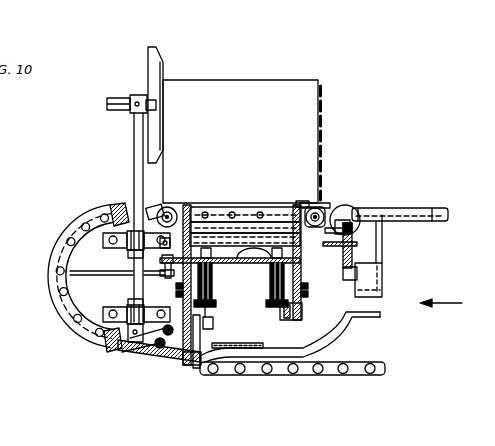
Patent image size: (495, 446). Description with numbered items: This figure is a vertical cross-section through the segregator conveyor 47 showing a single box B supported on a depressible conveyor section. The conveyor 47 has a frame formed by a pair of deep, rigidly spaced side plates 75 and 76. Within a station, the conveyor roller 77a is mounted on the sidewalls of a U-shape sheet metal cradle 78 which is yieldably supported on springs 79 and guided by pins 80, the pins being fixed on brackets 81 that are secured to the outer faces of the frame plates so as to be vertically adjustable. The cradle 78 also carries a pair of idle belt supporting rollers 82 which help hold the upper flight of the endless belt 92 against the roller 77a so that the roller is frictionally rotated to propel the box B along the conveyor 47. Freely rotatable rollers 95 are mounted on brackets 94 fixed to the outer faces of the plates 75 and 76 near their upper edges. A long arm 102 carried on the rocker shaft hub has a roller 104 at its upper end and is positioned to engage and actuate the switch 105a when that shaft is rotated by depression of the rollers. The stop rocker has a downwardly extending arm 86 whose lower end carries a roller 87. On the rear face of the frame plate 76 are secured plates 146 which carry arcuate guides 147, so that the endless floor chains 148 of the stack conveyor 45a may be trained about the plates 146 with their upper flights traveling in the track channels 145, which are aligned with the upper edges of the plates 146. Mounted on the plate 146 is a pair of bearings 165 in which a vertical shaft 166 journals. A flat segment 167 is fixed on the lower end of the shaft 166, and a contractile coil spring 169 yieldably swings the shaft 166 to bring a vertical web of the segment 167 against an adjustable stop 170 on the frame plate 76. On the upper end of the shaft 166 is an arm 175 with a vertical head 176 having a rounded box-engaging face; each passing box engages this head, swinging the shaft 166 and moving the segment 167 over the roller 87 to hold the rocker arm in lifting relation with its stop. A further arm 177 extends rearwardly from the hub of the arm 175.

The box B is at (305, 115).
The vertical head 176 is at (150, 83).
The arm 177 is at (107, 105).
The arm 175 is at (157, 104).
The vertical shaft 166 is at (135, 137).
The bearings 165 is at (113, 306).
The arcuate guides 147 is at (70, 230).
The plates 146 is at (119, 211).
The adjustable stop 170 is at (116, 352).
The contractile coil spring 169 is at (148, 353).
The flat segment 167 is at (183, 363).
The roller 87 is at (195, 368).
The side plate 76 is at (188, 207).
The conveyor roller 77a is at (219, 208).
The endless belt 92 is at (246, 231).
The side plate 75 is at (297, 203).
The rollers 95 is at (165, 207).
The idle belt supporting rollers 82 is at (291, 252).
The pins 80 is at (226, 261).
The cradle 78 is at (241, 282).
The springs 79 is at (268, 302).
The brackets 81 is at (210, 319).
The roller 104 is at (350, 206).
The stack conveyor 45a is at (374, 207).
The track channels 145 is at (436, 222).
The long arm 102 is at (366, 237).
The brackets 94 is at (318, 232).
The switch 105a is at (372, 273).
The conveyor 47 is at (451, 303).
The downwardly extending arm 86 is at (225, 356).
The endless floor chains 148 is at (360, 362).